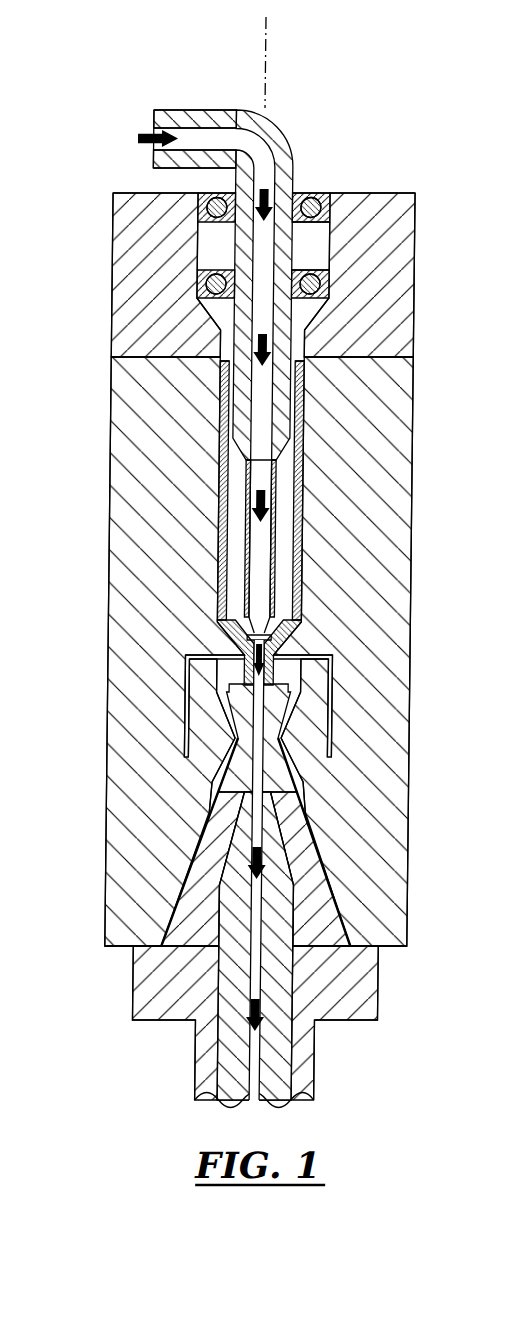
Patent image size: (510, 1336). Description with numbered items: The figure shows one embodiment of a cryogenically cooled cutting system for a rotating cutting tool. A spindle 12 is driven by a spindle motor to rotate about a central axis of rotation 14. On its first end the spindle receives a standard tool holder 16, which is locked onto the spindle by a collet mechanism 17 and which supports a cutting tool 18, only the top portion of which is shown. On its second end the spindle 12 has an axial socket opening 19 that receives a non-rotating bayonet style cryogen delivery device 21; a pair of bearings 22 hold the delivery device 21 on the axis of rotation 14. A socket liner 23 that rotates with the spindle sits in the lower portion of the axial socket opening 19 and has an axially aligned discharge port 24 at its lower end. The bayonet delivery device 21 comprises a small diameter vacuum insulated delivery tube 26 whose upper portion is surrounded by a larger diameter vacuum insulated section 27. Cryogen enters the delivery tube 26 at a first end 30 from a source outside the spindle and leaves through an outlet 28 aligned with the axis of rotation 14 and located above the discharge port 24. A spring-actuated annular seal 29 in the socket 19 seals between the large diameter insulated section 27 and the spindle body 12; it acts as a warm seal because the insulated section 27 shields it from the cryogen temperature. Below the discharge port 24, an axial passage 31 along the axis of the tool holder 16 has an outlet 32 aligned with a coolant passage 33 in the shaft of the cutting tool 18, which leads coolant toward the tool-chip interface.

The spindle 12 is at (397, 800).
The central axis of rotation 14 is at (267, 66).
The tool holder 16 is at (386, 1000).
The collet mechanism 17 is at (213, 718).
The cutting tool 18 is at (284, 1058).
The axial socket opening 19 is at (313, 237).
The bayonet style cryogen delivery device 21 is at (238, 250).
The bearings 22 is at (327, 193).
The socket liner 23 is at (309, 548).
The discharge port 24 is at (273, 655).
The vacuum insulated delivery tube 26 is at (265, 475).
The large diameter vacuum insulated section 27 is at (285, 407).
The outlet 28 is at (305, 637).
The annular seal 29 is at (224, 363).
The first end 30 is at (153, 162).
The axial passage 31 is at (264, 722).
The outlet 32 is at (268, 784).
The coolant passage 33 is at (264, 968).